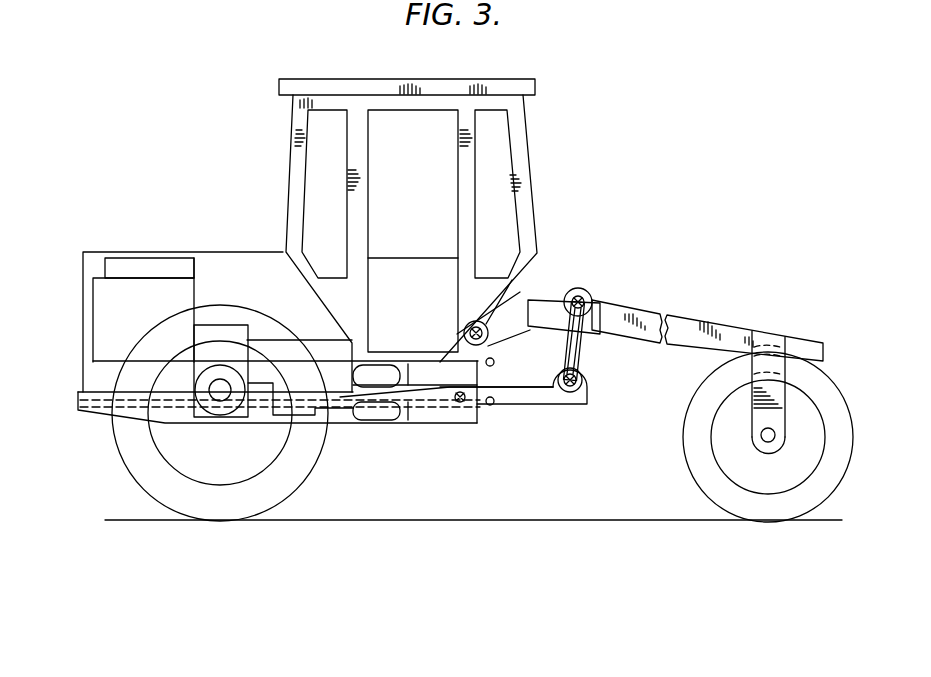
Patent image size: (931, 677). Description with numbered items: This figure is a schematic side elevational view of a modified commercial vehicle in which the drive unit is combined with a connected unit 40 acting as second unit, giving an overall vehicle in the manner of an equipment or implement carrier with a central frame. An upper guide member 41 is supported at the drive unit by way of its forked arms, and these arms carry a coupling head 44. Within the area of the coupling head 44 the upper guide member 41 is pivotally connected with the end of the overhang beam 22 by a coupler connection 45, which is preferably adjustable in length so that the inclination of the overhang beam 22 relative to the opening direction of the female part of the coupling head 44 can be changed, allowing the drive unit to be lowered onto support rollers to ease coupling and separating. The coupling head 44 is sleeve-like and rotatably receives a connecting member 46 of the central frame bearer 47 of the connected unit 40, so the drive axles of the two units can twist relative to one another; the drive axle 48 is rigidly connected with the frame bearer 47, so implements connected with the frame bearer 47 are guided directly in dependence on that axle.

The overhang beam 22 is at (528, 398).
The connected unit 40 is at (627, 300).
The upper guide member 41 is at (522, 293).
The coupling head 44 is at (601, 298).
The coupler connection 45 is at (586, 352).
The connecting member 46 is at (541, 318).
The central frame bearer 47 is at (692, 327).
The drive axle 48 is at (755, 437).